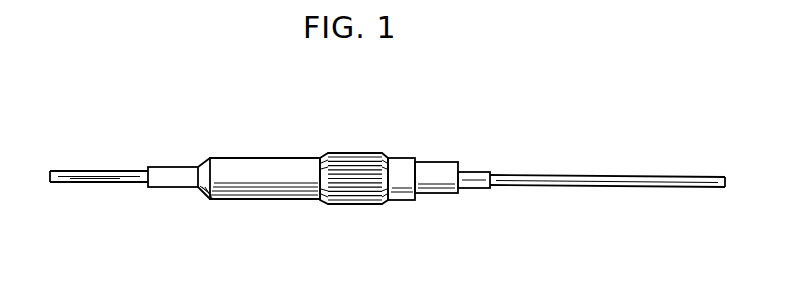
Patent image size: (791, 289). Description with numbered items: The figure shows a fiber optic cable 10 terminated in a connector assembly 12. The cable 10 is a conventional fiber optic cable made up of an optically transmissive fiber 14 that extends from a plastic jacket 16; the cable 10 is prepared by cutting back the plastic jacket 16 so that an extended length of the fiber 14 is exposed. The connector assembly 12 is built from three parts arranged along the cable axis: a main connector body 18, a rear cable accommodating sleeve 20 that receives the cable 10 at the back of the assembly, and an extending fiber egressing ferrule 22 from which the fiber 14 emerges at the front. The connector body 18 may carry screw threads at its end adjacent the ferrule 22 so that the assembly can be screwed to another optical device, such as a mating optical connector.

The fiber optic cable 10 is at (110, 158).
The connector assembly 12 is at (355, 146).
The optically transmissive fiber 14 is at (552, 178).
The plastic jacket 16 is at (110, 177).
The main connector body 18 is at (385, 200).
The rear cable accommodating sleeve 20 is at (233, 170).
The fiber egressing ferrule 22 is at (437, 187).